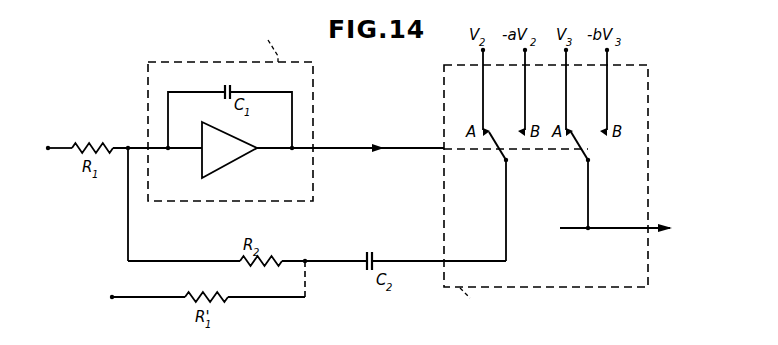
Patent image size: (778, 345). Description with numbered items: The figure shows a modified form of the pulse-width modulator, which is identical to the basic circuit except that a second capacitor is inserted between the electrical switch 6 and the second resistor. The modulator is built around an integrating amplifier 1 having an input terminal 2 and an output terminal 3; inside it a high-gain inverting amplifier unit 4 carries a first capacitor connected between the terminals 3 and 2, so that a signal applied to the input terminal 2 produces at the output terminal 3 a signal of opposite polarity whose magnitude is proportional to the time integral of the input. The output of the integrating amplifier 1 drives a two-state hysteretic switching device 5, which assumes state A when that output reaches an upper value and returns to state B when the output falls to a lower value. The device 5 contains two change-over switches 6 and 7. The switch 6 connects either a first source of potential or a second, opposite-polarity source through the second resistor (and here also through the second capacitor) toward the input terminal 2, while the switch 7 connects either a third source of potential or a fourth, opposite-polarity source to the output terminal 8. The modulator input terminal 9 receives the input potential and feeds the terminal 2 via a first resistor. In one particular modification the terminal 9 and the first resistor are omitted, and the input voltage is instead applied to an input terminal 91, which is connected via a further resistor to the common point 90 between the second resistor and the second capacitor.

The integrating amplifier 1 is at (145, 72).
The input terminal 2 is at (168, 151).
The output terminal 3 is at (292, 151).
The high-gain inverting amplifier unit 4 is at (226, 165).
The two-state hysteretic switching device 5 is at (444, 198).
The change-over switch 6 is at (503, 160).
The change-over switch 7 is at (590, 157).
The output terminal 8 is at (560, 228).
The input terminal 9 is at (48, 151).
The common point 90 is at (306, 258).
The input terminal 91 is at (112, 294).